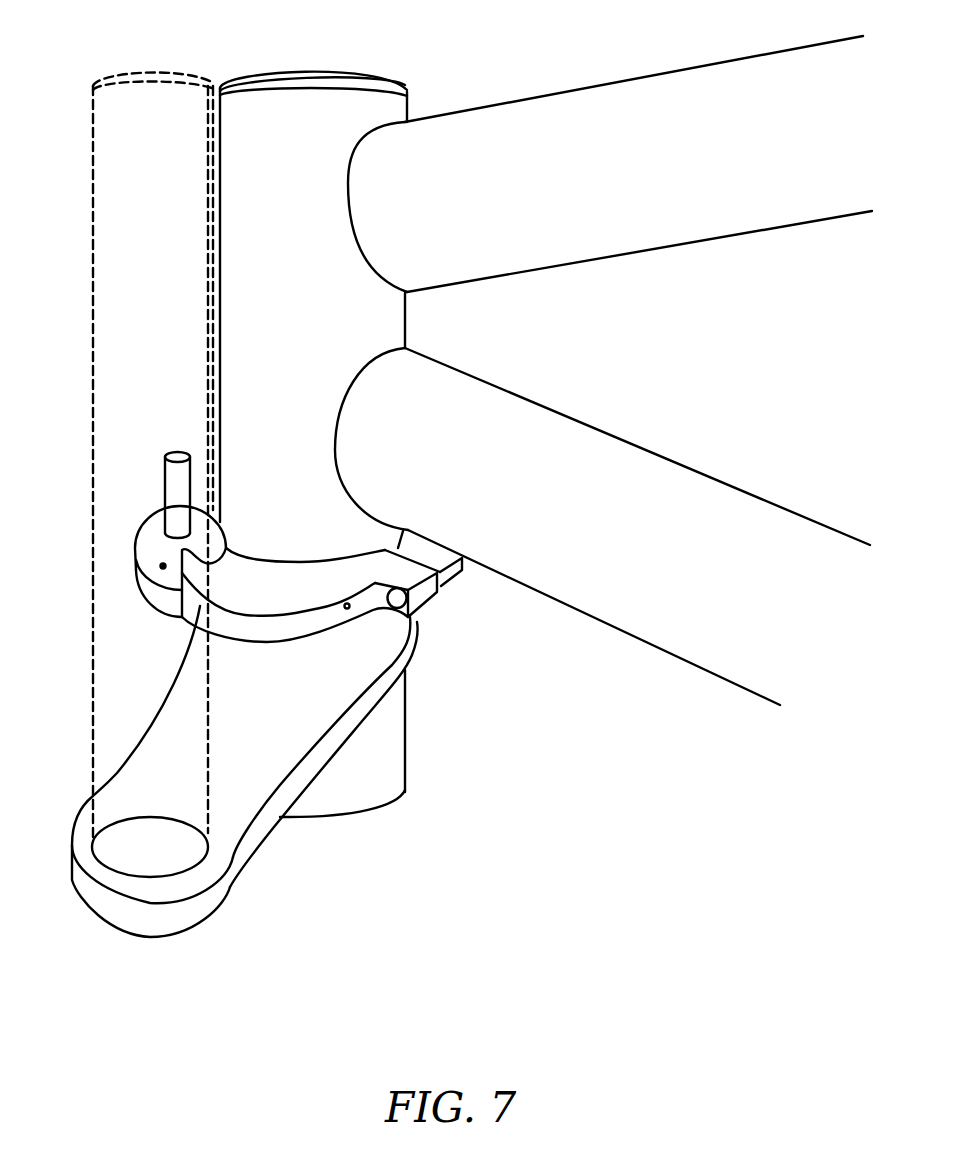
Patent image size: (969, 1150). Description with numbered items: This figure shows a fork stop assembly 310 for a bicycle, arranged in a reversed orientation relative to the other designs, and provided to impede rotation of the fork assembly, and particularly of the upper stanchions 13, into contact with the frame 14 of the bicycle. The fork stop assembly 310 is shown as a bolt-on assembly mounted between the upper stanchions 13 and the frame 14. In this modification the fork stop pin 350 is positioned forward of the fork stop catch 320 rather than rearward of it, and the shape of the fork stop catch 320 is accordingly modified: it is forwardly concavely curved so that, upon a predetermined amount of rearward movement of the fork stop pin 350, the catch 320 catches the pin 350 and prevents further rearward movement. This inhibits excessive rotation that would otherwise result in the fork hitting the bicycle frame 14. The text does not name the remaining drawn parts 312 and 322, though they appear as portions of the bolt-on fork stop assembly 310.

The upper stanchions 13 is at (214, 86).
The frame 14 is at (608, 468).
The fork stop assembly 310 is at (310, 675).
The post bracket 312 is at (312, 850).
The fork stop catch 320 is at (262, 575).
The clamp ring 322 is at (160, 497).
The fork stop pin 350 is at (178, 482).